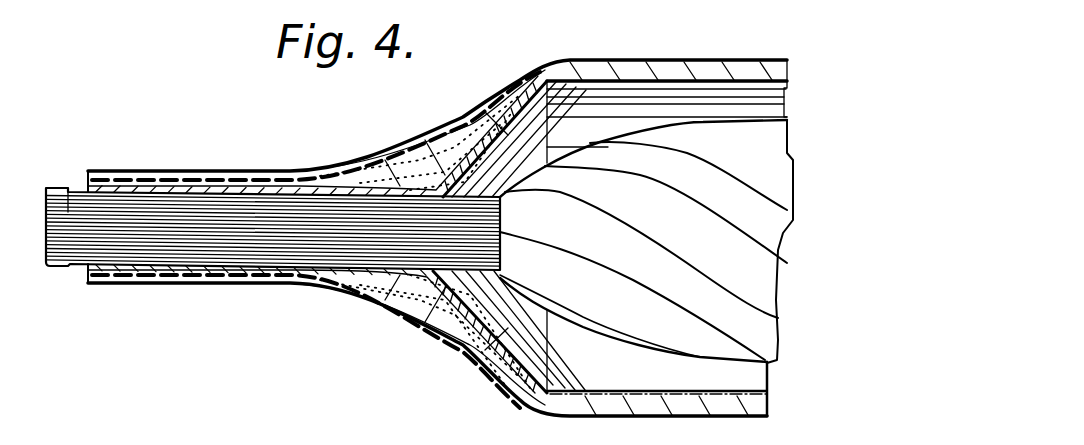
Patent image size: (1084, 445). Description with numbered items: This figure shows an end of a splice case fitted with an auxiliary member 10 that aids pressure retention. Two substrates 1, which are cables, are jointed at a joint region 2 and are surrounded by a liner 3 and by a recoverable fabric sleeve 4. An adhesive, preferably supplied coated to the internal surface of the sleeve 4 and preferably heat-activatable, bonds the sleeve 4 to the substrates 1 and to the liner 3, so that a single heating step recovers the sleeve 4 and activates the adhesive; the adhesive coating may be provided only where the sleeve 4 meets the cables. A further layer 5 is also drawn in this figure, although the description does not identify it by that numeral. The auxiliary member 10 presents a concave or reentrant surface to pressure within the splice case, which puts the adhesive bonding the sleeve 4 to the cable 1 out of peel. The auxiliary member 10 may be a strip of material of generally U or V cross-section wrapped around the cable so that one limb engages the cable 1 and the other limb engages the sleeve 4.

The substrate 1 is at (68, 208).
The joint region 2 is at (647, 177).
The liner 3 is at (500, 113).
The recoverable fabric sleeve 4 is at (537, 62).
The intermediate layer 5 is at (470, 125).
The auxiliary member 10 is at (377, 160).